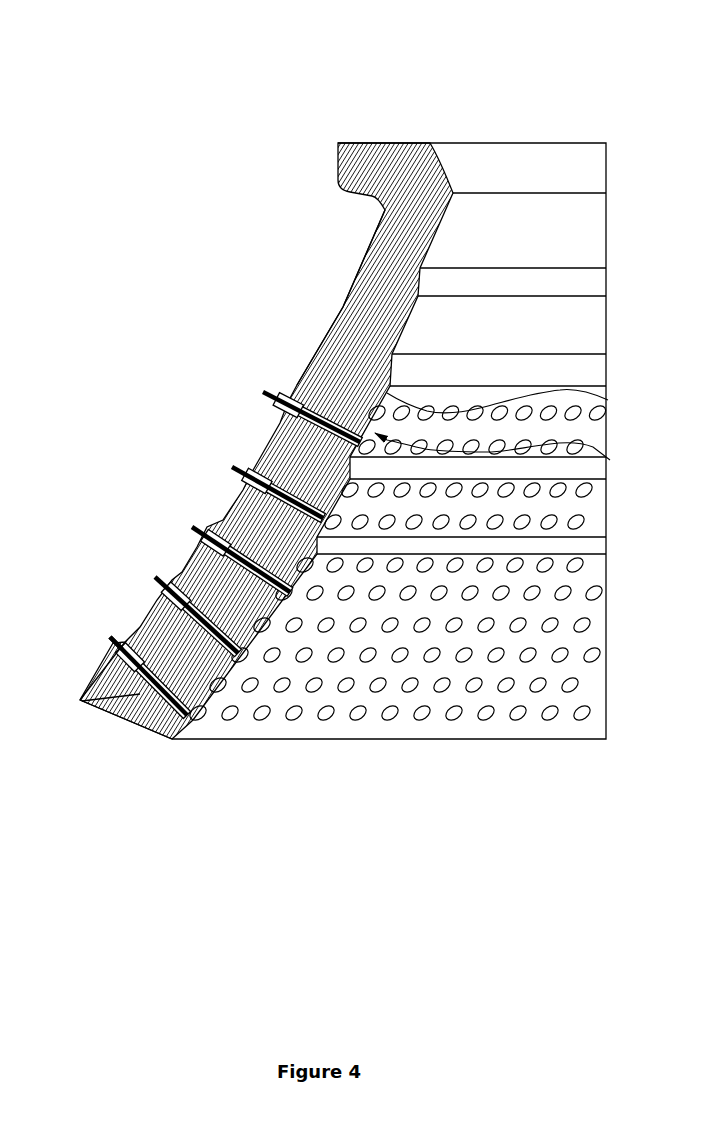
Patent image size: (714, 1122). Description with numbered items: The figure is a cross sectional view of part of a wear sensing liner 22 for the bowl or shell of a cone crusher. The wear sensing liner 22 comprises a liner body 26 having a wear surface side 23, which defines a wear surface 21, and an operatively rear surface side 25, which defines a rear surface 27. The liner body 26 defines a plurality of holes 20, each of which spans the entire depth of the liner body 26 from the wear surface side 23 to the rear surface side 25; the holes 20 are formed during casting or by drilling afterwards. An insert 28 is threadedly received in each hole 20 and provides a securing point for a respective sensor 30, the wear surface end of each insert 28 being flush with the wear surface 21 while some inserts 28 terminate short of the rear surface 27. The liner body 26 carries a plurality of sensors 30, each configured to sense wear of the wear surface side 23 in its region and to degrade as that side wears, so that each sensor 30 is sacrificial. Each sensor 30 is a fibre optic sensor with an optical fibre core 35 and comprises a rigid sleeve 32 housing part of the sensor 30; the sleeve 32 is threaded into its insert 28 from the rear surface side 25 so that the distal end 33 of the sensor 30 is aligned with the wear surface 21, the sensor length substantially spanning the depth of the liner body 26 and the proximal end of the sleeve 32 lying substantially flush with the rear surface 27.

The wear sensing liner 22 is at (373, 104).
The wear surface 21 is at (513, 401).
The wear surface side 23 is at (507, 454).
The rear surface side 25 is at (325, 336).
The liner body 26 is at (372, 280).
The rear surface 27 is at (342, 303).
The sensor 30 is at (306, 428).
The optical fibre core 35 is at (110, 638).
The hole 20 is at (117, 664).
The insert 28 is at (104, 703).
The rigid sleeve 32 is at (148, 714).
The distal end 33 is at (196, 719).